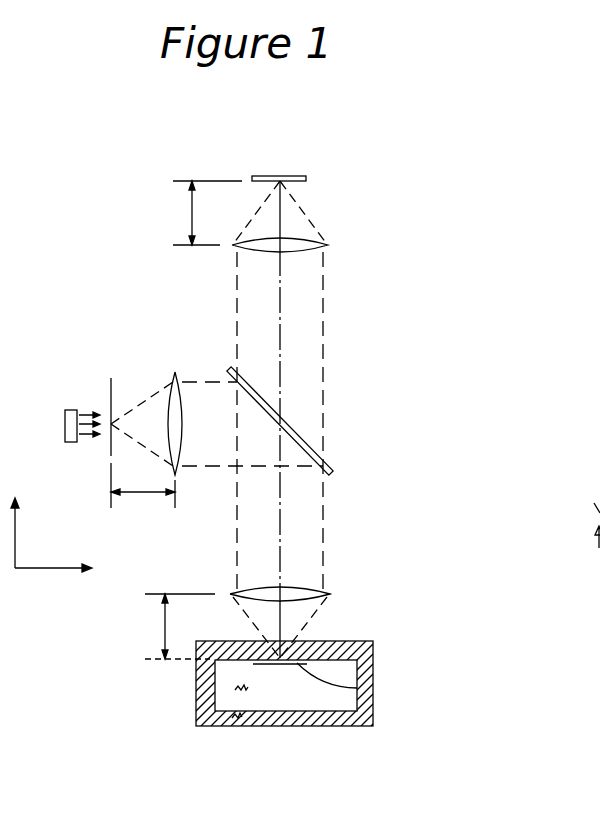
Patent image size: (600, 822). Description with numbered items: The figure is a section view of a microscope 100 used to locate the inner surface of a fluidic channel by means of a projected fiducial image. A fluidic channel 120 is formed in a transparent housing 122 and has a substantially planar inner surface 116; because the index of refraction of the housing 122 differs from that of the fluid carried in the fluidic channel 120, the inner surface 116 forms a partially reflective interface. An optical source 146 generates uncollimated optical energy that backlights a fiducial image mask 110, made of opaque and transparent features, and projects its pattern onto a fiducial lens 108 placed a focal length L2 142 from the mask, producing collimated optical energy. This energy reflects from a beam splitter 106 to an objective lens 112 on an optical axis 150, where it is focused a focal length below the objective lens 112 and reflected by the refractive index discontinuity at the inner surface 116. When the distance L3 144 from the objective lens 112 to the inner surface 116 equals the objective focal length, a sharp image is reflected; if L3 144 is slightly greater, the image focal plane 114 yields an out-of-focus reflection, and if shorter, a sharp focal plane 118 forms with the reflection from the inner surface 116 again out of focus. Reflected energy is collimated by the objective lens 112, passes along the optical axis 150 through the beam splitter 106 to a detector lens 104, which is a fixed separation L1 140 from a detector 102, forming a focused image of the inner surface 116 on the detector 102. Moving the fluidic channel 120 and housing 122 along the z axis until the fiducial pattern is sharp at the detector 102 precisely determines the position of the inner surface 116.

The microscope 100 is at (158, 161).
The detector 102 is at (305, 178).
The detector lens 104 is at (330, 245).
The beam splitter 106 is at (232, 366).
The fiducial lens 108 is at (175, 374).
The fiducial image mask 110 is at (111, 380).
The objective lens 112 is at (331, 594).
The image focal plane 114 is at (296, 654).
The inner surface 116 is at (342, 642).
The sharp focal plane 118 is at (357, 688).
The fluidic channel 120 is at (235, 690).
The transparent housing 122 is at (233, 717).
The focal length L1 140 is at (189, 213).
The focal length L2 142 is at (144, 507).
The focal length L3 144 is at (158, 626).
The optical source 146 is at (72, 408).
The optical axis 150 is at (283, 350).